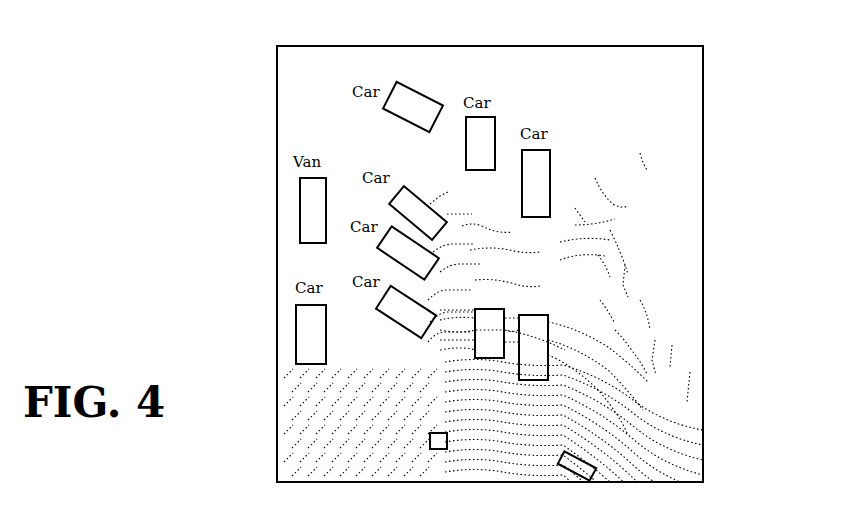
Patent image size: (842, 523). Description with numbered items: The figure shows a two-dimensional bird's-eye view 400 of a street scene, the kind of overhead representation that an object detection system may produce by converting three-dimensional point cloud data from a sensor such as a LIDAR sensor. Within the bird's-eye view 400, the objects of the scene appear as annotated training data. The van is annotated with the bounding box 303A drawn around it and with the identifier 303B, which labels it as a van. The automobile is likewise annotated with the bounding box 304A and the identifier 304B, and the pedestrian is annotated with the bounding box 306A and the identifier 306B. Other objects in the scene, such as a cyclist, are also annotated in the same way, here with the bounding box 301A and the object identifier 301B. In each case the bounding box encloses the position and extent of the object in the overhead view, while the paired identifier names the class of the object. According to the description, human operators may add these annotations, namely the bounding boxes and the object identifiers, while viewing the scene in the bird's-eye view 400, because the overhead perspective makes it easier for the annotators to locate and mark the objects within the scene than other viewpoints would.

The two-dimensional bird's-eye view 400 is at (572, 66).
The bounding box 304A is at (475, 348).
The identifier 304B is at (492, 283).
The bounding box 303A is at (550, 337).
The identifier 303B is at (555, 302).
The bounding box 306A is at (387, 419).
The identifier 306B is at (430, 438).
The bounding box 301A is at (600, 472).
The object identifier 301B is at (603, 428).